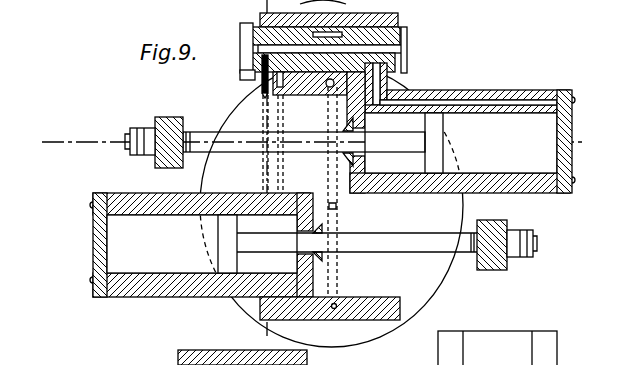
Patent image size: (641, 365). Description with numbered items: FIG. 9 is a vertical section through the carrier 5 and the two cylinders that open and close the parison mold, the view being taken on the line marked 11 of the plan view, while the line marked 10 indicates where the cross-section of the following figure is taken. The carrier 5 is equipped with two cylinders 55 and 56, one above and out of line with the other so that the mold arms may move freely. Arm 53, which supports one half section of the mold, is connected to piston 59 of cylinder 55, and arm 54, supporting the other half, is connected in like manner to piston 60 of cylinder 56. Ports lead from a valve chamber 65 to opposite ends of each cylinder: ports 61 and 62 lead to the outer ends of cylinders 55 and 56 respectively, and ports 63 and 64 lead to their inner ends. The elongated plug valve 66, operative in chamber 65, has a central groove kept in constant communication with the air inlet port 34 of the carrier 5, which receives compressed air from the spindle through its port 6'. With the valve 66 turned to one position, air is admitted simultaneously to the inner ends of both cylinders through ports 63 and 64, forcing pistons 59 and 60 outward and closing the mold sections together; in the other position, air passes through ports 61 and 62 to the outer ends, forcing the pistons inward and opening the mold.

The carrier 5 is at (331, 205).
The port of spindle 6' is at (348, 213).
The section line 10— 10 is at (262, 4).
The section line 11— 11 is at (311, 145).
The air inlet port 34 is at (334, 309).
The arm 53 is at (170, 110).
The arm 54 is at (498, 272).
The cylinder 55 is at (561, 192).
The cylinder 56 is at (139, 290).
The piston 59 is at (440, 130).
The piston 60 is at (222, 257).
The port 61 is at (490, 95).
The port 62 is at (262, 76).
The port 63 is at (386, 84).
The port 64 is at (283, 97).
The valve chamber 65 is at (388, 13).
The plug valve 66 is at (407, 30).